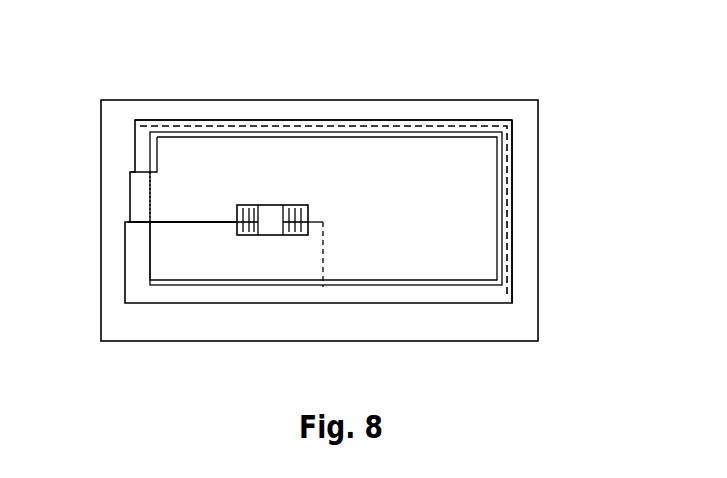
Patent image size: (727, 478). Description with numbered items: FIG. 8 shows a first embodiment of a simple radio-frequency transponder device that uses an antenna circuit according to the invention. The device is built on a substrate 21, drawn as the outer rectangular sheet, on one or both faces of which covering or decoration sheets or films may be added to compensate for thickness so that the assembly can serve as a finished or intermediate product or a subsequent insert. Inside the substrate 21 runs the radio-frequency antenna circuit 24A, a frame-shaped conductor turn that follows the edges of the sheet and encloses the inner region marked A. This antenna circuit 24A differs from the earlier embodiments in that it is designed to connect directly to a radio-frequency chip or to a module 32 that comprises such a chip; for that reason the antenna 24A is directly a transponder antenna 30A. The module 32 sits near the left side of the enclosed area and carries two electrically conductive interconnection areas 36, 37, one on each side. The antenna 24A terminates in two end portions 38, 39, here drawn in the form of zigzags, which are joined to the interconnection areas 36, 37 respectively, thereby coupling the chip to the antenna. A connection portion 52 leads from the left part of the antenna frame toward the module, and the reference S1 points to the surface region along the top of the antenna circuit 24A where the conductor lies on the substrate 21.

The substrate 21 is at (103, 316).
The radio-frequency antenna circuit 24A is at (514, 187).
The transponder antenna 30A is at (543, 250).
The module 32 is at (270, 240).
The interconnection area 36 is at (252, 205).
The interconnection area 37 is at (288, 205).
The end portion 38 is at (245, 235).
The end portion 39 is at (298, 237).
The connection wiring 52 is at (132, 197).
The substrate surface S1 is at (367, 120).
The antenna region A is at (458, 157).